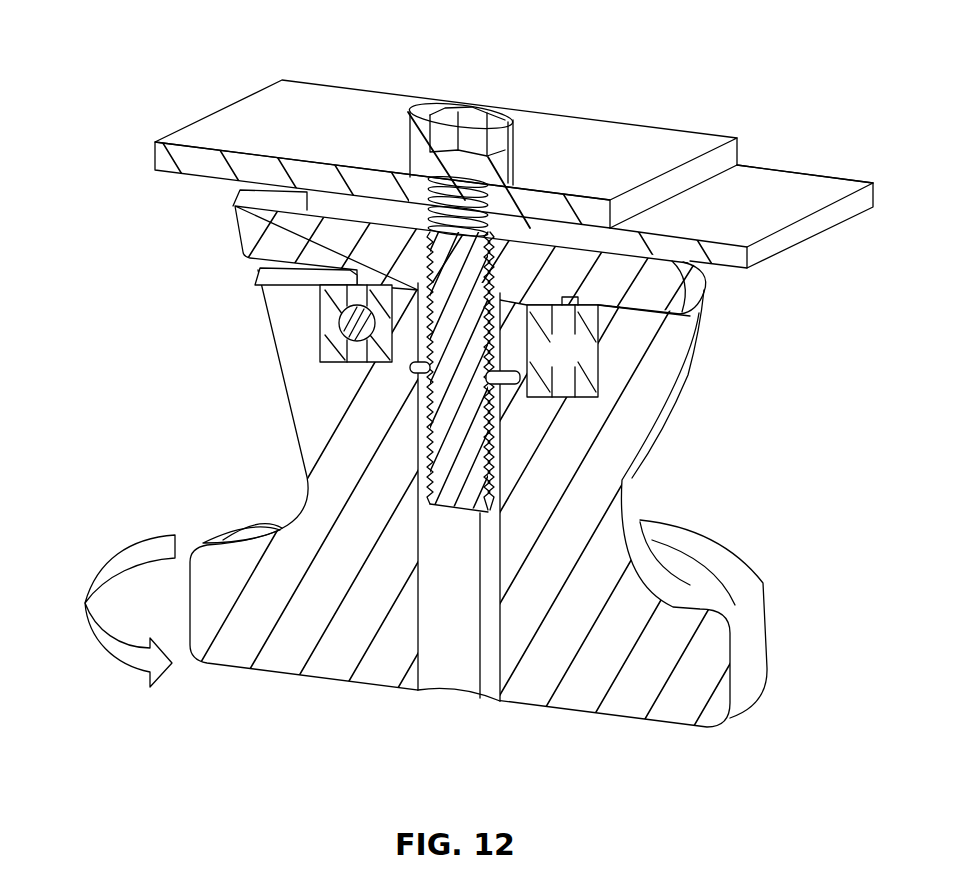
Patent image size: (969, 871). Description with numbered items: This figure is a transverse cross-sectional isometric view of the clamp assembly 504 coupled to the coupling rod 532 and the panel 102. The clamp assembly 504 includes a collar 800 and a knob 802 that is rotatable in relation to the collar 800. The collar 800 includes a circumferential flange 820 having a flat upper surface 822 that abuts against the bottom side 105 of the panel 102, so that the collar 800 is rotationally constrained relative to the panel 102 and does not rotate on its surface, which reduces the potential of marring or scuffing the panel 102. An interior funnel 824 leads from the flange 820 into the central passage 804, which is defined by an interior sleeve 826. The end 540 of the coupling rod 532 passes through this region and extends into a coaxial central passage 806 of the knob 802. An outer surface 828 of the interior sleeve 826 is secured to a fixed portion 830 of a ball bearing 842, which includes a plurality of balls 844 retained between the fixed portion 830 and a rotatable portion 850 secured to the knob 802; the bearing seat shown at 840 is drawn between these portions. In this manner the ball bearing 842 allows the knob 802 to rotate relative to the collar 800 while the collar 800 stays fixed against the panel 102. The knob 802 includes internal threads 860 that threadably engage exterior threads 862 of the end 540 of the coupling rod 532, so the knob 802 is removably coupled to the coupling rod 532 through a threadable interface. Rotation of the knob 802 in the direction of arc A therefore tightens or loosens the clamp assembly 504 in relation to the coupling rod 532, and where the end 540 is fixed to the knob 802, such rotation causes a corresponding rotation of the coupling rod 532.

The panel 102 is at (662, 150).
The bottom side 105 is at (335, 228).
The clamp assembly 504 is at (240, 390).
The coupling rod 532 is at (474, 132).
The end 540 is at (510, 440).
The collar 800 is at (238, 226).
The knob 802 is at (650, 450).
The central passage 804 is at (512, 250).
The coaxial central passage 806 is at (466, 695).
The circumferential flange 820 is at (698, 278).
The flat upper surface 822 is at (285, 200).
The interior funnel 824 is at (423, 258).
The interior sleeve 826 is at (498, 298).
The outer surface 828 is at (423, 258).
The fixed portion 830 is at (412, 366).
The inner race 840 is at (277, 264).
The ball bearing 842 is at (603, 314).
The balls 844 is at (350, 324).
The rotatable portion 850 is at (590, 386).
The internal threads 860 is at (600, 530).
The exterior threads 862 is at (425, 505).
The arc A is at (85, 603).